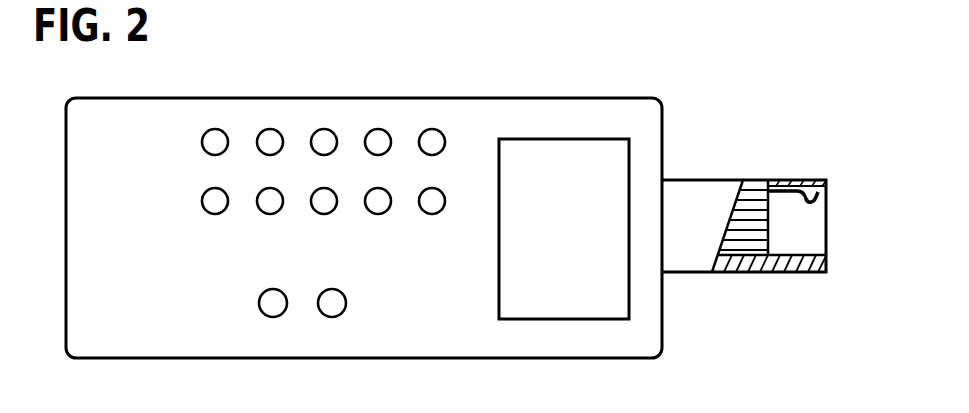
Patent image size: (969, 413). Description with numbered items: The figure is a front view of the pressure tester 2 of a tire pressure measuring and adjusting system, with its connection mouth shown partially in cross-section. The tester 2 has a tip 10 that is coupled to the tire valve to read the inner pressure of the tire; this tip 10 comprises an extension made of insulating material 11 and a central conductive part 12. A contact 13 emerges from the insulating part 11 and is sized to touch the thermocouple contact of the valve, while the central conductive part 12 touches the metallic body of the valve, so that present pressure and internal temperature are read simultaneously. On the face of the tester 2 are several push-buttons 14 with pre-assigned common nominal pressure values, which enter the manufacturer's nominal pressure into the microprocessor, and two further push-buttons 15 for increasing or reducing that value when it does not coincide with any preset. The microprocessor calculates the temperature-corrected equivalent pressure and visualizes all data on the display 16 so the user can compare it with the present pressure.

The pressure tester 2 is at (135, 98).
The tip 10 is at (683, 188).
The extension made of insulating material 11 is at (805, 240).
The central conductive part 12 is at (753, 235).
The contact 13 is at (812, 186).
The push-buttons 14 is at (378, 137).
The push-buttons 15 is at (332, 310).
The display 16 is at (576, 296).